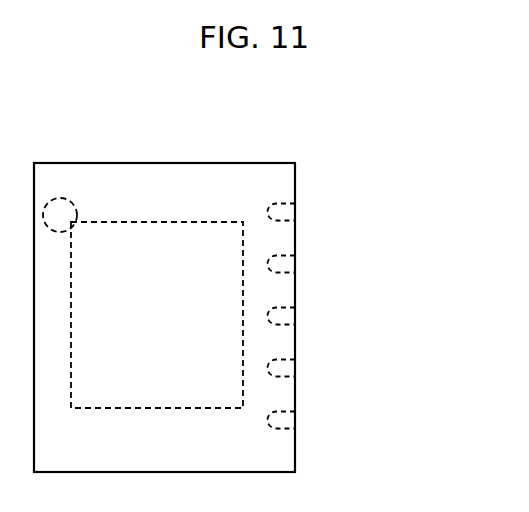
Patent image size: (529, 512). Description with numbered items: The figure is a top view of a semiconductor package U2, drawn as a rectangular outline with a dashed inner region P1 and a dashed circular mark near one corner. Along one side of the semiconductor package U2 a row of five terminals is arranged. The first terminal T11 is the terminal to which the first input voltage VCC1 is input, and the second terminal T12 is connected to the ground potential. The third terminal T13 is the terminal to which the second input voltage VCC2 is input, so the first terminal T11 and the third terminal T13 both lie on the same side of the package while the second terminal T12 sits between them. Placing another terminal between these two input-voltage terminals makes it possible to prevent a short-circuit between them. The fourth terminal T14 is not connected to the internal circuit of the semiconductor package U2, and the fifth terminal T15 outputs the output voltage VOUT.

The semiconductor package U2 is at (148, 92).
The die pad / exposed pad P1 is at (217, 222).
The first terminal T11 is at (295, 212).
The second terminal T12 is at (295, 264).
The third terminal T13 is at (295, 316).
The fourth terminal T14 is at (295, 368).
The fifth terminal T15 is at (295, 420).